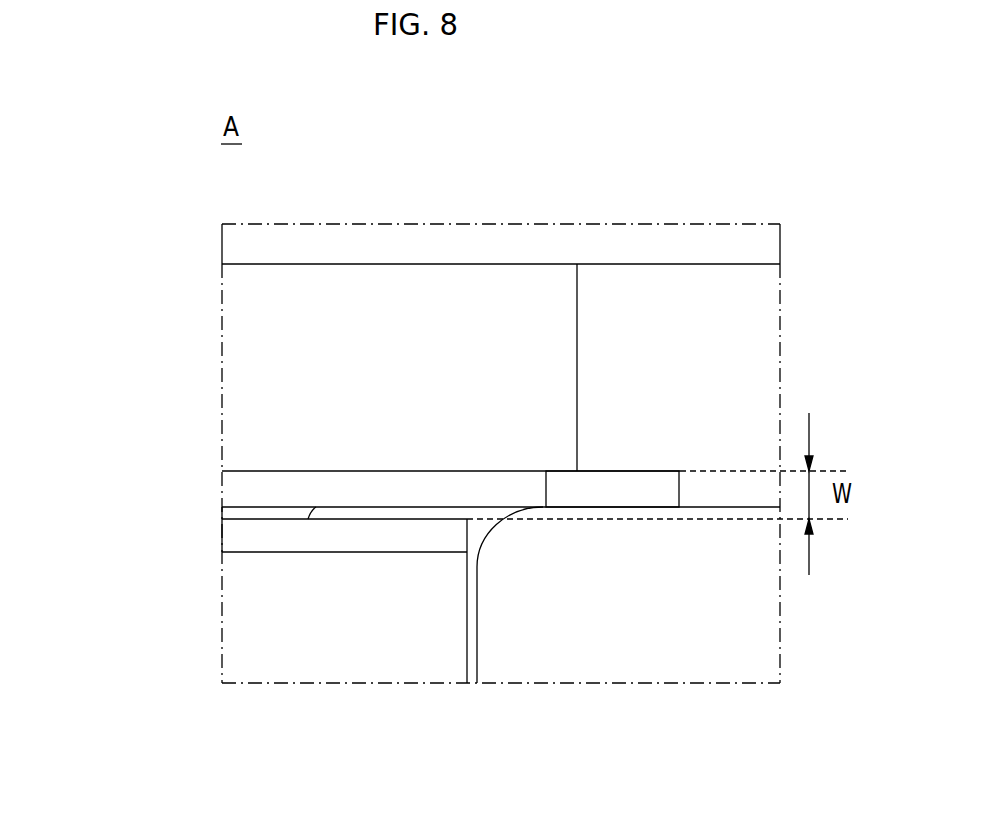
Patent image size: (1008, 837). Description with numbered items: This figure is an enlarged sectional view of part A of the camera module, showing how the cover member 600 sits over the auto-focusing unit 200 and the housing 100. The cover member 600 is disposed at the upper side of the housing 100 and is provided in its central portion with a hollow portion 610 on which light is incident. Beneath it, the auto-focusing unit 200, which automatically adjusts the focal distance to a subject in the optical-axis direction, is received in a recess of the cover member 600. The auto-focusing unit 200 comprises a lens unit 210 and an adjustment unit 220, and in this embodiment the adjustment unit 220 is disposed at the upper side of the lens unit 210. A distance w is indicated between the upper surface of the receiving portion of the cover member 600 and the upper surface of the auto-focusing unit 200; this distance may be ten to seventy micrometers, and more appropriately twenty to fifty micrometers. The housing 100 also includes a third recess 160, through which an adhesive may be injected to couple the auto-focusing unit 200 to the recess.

The housing 100 is at (742, 633).
The third recess 160 is at (644, 633).
The auto-focusing unit 200 is at (122, 527).
The lens unit 210 is at (265, 637).
The adjustment unit 220 is at (265, 537).
The cover member 600 is at (677, 330).
The hollow portion 610 is at (373, 361).